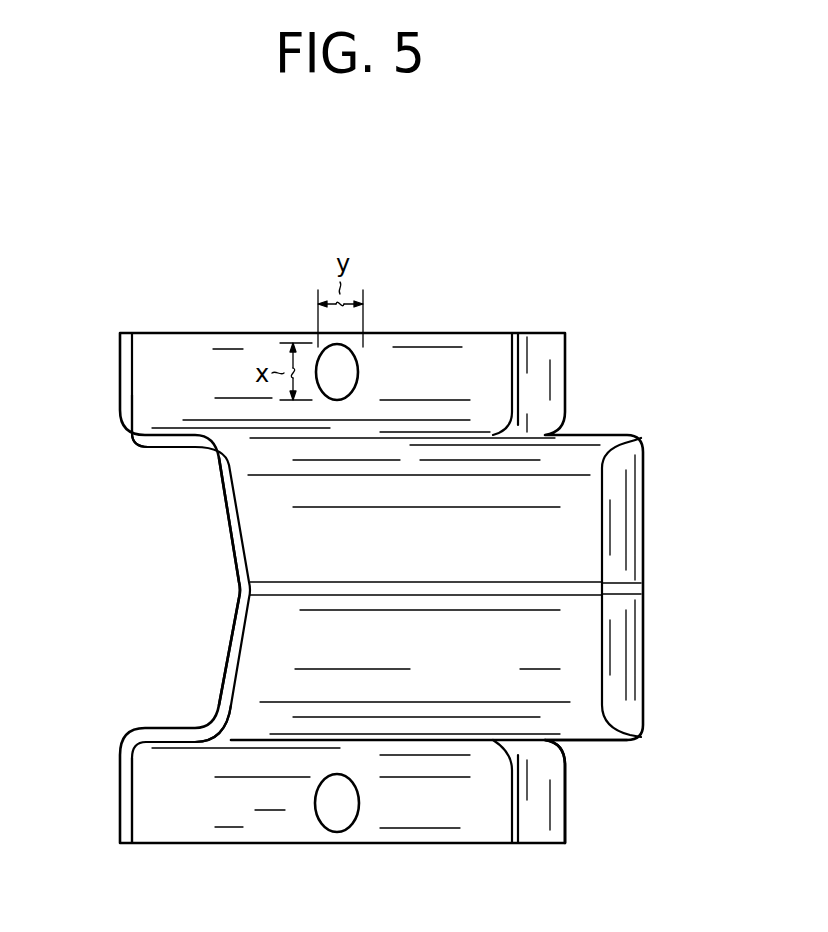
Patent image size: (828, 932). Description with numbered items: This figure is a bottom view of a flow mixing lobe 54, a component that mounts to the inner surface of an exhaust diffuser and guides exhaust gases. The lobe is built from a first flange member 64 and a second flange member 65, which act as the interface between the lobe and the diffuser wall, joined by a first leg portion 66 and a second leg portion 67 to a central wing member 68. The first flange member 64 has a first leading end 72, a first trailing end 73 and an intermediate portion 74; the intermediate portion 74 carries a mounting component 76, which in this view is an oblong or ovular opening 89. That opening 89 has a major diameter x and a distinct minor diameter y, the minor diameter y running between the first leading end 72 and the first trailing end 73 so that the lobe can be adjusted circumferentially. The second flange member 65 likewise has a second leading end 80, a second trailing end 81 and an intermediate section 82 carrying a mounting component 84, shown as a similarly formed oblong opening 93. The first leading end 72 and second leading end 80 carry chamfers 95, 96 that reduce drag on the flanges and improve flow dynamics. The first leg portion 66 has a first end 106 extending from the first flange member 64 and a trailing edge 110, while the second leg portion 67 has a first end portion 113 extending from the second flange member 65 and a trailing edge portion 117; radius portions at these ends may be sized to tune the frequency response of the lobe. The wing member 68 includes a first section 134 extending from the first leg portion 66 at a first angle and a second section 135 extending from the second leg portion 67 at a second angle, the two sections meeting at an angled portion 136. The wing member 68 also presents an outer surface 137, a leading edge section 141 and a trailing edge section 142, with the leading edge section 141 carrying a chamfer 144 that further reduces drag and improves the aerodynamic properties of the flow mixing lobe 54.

The flow mixing lobe 54 is at (145, 577).
The first flange member 64 is at (160, 370).
The second flange member 65 is at (225, 810).
The first leg portion 66 is at (433, 435).
The second leg portion 67 is at (407, 752).
The wing member 68 is at (410, 658).
The first leading end 72 is at (567, 350).
The first trailing end 73 is at (125, 393).
The intermediate portion 74 is at (433, 370).
The mounting component 76 is at (358, 406).
The second leading end 80 is at (562, 815).
The second trailing end 81 is at (122, 812).
The intermediate section 82 is at (258, 800).
The mounting component 84 is at (378, 815).
The oblong opening 89 is at (355, 375).
The oblong opening 93 is at (323, 826).
The chamfer 95 is at (535, 345).
The chamfer 96 is at (550, 778).
The first end 106 is at (252, 440).
The trailing edge 110 is at (150, 452).
The first end portion 113 is at (578, 737).
The trailing edge portion 117 is at (183, 735).
The first section 134 is at (478, 557).
The second section 135 is at (555, 642).
The angled portion 136 is at (300, 590).
The outer surface 137 is at (288, 668).
The leading edge section 141 is at (645, 610).
The trailing edge section 142 is at (238, 629).
The chamfer 144 is at (613, 660).